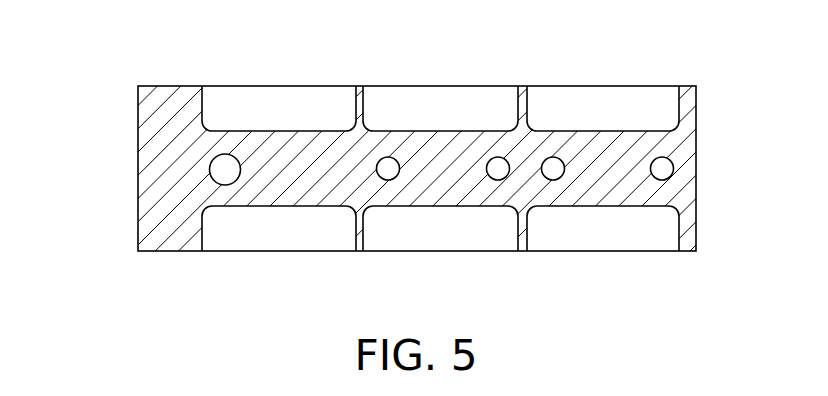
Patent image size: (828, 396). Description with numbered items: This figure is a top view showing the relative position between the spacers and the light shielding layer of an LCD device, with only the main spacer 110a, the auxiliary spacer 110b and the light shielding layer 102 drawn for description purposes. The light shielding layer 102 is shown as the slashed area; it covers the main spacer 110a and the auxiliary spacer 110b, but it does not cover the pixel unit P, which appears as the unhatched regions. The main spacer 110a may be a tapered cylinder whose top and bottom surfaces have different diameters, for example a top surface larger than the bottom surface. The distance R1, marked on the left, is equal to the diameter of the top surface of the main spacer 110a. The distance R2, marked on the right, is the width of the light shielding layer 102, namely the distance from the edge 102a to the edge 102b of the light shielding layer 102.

The light shielding layer 102 is at (297, 160).
The edge of the light shielding layer 102a is at (254, 128).
The edge of the light shielding layer 102b is at (302, 209).
The main spacer 110a is at (226, 169).
The auxiliary spacer 110b is at (498, 168).
The pixel unit P is at (612, 107).
The distance R1 is at (220, 153).
The distance R2 is at (667, 131).